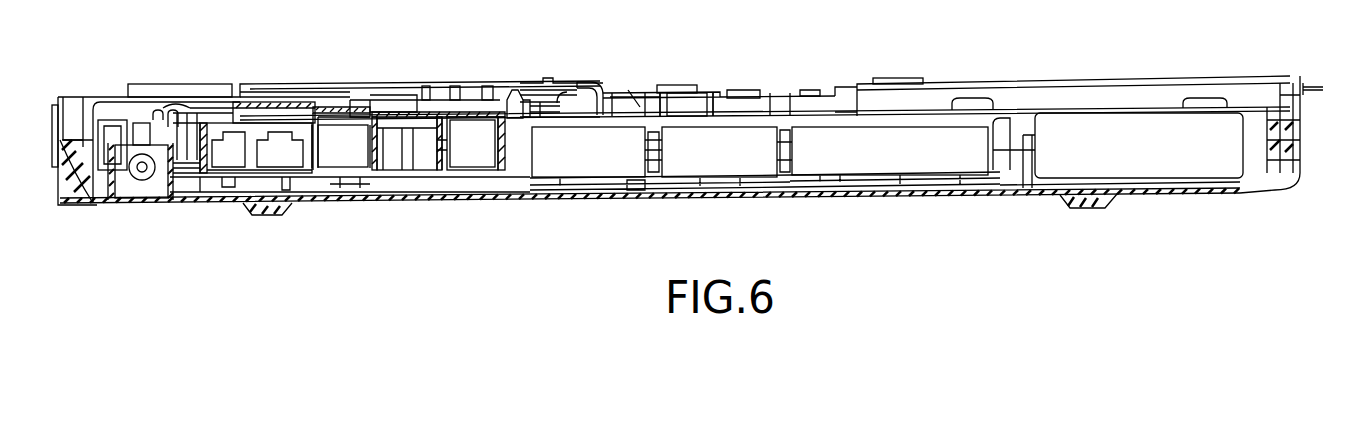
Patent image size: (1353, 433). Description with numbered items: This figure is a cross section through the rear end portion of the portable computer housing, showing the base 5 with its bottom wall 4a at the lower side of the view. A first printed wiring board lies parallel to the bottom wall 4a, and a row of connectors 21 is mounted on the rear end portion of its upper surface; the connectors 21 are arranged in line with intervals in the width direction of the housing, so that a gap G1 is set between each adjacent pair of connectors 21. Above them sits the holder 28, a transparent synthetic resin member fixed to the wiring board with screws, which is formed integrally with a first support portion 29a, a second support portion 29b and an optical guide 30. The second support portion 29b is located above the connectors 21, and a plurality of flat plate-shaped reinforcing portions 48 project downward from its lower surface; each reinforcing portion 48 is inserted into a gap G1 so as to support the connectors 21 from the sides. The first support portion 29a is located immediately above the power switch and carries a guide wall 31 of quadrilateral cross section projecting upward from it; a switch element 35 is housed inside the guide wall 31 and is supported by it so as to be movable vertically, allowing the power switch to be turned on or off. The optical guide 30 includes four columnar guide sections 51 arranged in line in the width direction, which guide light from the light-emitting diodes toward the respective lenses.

The base 5 is at (115, 207).
The bottom wall 4a is at (868, 197).
The connectors 21 is at (152, 196).
The second support portion 29b is at (250, 120).
The reinforcing portions 48 is at (307, 140).
The gap G1 is at (354, 160).
The guide sections 51 is at (454, 86).
The optical guide 30 is at (530, 111).
The switch element 35 is at (682, 85).
The guide wall 31 is at (688, 108).
The holder 28 is at (618, 126).
The first support portion 29a is at (683, 118).